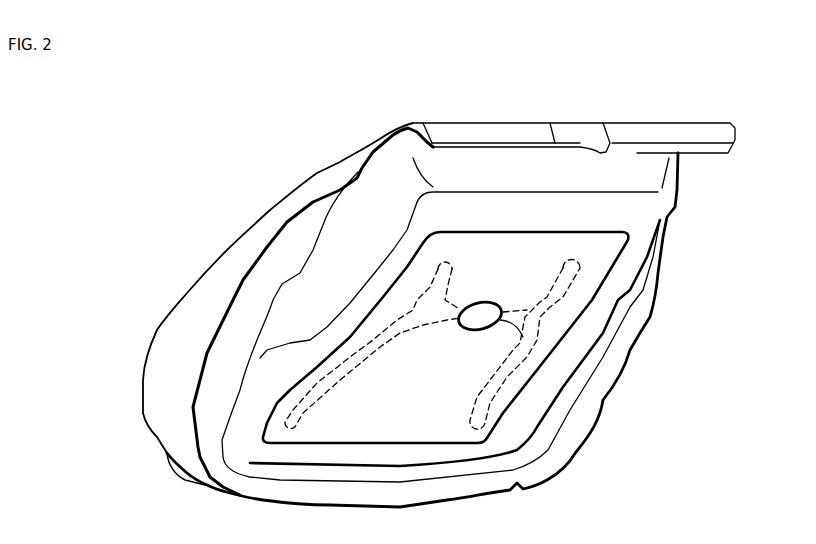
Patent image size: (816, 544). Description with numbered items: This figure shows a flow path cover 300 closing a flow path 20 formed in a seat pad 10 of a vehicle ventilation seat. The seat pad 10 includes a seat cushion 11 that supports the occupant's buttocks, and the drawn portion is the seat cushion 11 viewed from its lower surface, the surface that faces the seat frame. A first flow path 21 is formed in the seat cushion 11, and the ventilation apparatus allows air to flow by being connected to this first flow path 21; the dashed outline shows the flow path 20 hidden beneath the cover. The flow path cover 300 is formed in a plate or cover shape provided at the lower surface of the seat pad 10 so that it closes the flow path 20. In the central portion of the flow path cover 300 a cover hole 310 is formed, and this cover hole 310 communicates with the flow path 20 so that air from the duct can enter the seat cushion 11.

The seat pad 10 is at (382, 315).
The seat cushion 11 is at (212, 290).
The flow path 20 is at (363, 298).
The first flow path 21 is at (442, 280).
The flow path cover 300 is at (600, 267).
The cover hole 310 is at (481, 323).